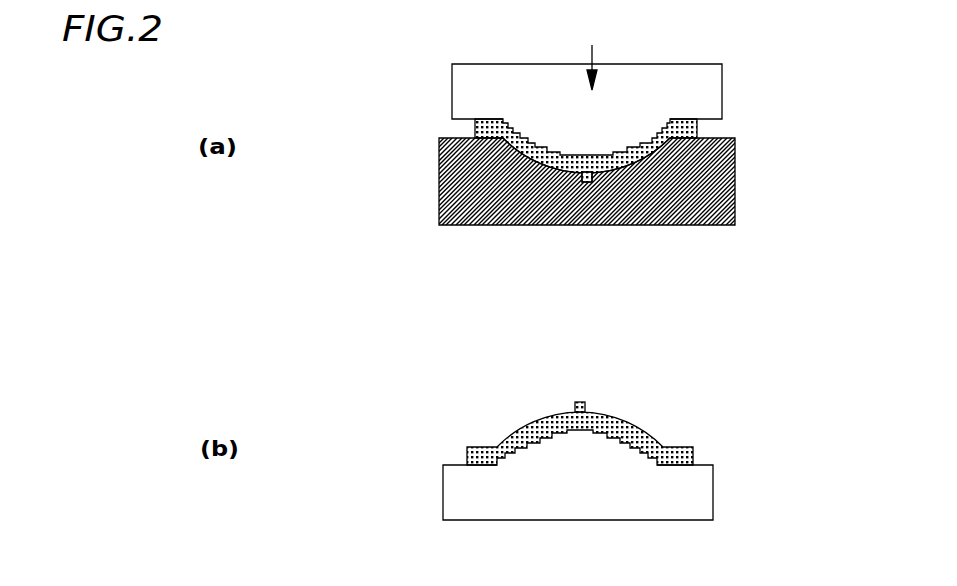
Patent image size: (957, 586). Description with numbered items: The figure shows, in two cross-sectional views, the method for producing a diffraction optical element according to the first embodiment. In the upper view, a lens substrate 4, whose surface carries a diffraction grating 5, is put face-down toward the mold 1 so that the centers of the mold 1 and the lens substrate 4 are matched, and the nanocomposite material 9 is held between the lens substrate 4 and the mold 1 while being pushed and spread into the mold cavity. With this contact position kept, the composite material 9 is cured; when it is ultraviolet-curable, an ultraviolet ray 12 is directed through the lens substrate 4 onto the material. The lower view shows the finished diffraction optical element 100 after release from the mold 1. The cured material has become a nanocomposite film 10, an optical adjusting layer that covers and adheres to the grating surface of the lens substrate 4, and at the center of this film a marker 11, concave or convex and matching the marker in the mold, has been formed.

The mold 1 is at (462, 178).
The lens substrate 4 is at (463, 91).
The diffraction grating 5 is at (572, 429).
The nanocomposite material 9 is at (623, 157).
The nanocomposite film 10 is at (630, 433).
The marker 11 is at (580, 397).
The ultraviolet ray 12 is at (592, 47).
The diffraction optical element 100 is at (724, 329).